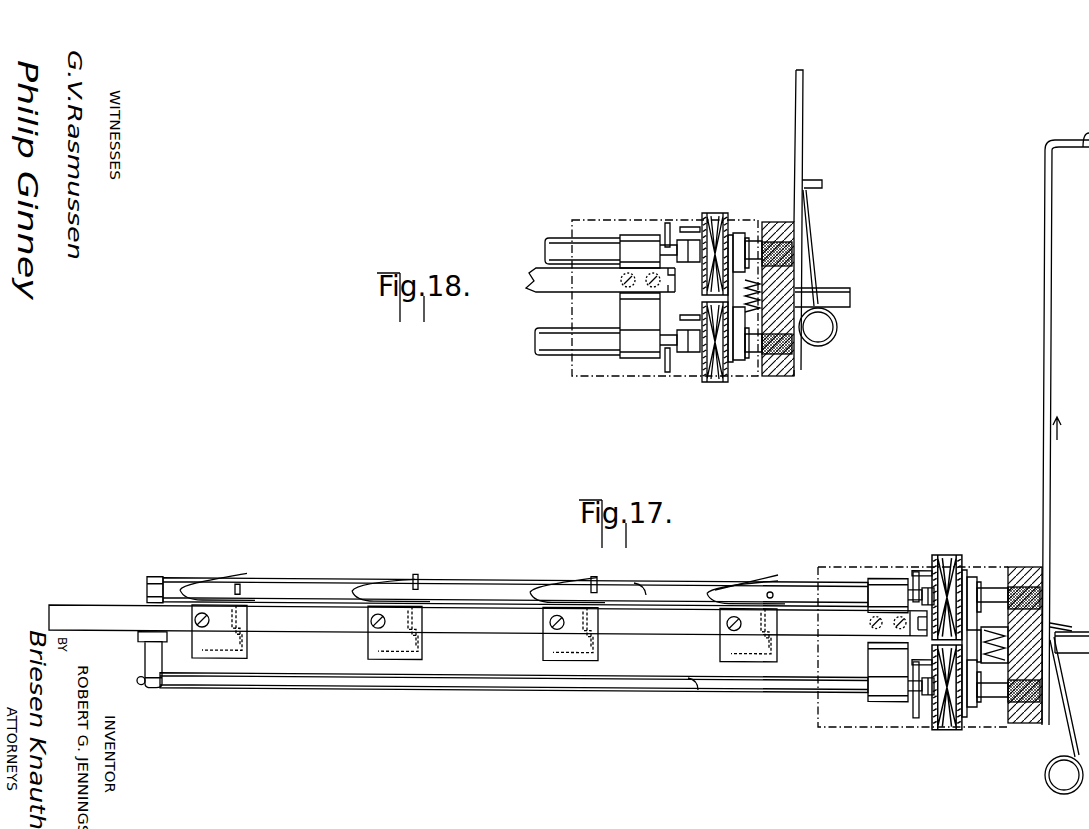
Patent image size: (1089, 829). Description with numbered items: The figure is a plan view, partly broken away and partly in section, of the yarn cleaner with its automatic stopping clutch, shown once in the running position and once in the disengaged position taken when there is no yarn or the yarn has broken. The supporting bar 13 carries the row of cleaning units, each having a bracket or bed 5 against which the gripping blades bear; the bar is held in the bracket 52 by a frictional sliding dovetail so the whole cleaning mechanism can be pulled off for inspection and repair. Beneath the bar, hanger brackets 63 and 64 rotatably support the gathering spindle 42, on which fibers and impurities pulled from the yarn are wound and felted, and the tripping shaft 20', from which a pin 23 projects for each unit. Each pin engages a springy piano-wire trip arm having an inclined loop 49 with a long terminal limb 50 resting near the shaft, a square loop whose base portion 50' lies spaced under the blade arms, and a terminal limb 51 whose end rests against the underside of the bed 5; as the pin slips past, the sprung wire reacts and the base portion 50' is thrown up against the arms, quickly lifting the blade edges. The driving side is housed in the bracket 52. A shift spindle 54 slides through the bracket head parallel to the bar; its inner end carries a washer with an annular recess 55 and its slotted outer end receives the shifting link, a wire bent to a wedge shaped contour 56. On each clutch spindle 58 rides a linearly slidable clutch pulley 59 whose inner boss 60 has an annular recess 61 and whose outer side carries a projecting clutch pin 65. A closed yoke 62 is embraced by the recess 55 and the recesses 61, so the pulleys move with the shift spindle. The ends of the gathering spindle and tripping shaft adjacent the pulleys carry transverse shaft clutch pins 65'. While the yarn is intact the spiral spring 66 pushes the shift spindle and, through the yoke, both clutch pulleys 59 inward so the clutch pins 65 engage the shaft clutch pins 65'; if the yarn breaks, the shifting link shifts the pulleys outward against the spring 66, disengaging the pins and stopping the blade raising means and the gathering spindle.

In FIG. 17, the bracket or bed 5 is at (247, 645).
In FIG. 18, the supporting bar 13 is at (536, 284).
In FIG. 17, the supporting bar 13 is at (88, 606).
In FIG. 18, the tripping shaft 20' is at (578, 239).
In FIG. 17, the tripping shaft 20' is at (515, 584).
In FIG. 17, the pin 23 is at (418, 578).
In FIG. 18, the gathering spindle 42 is at (550, 342).
In FIG. 17, the gathering spindle 42 is at (606, 684).
In FIG. 17, the loop 49 is at (352, 588).
In FIG. 17, the terminal limb 50 is at (431, 573).
In FIG. 17, the base portion 50' is at (527, 638).
In FIG. 17, the terminal limb 51 is at (400, 656).
In FIG. 18, the bracket 52 is at (796, 366).
In FIG. 17, the bracket 52 is at (1043, 575).
In FIG. 18, the shift spindle 54 is at (850, 295).
In FIG. 17, the shift spindle 54 is at (1088, 638).
In FIG. 17, the annular recess 55 is at (979, 632).
In FIG. 18, the wedge shaped contour 56 is at (813, 246).
In FIG. 17, the wedge shaped contour 56 is at (1070, 710).
In FIG. 18, the clutch spindle 58 is at (752, 355).
In FIG. 17, the clutch spindle 58 is at (990, 587).
In FIG. 18, the clutch pulley 59 is at (712, 213).
In FIG. 17, the clutch pulley 59 is at (947, 557).
In FIG. 18, the boss 60 is at (740, 232).
In FIG. 17, the boss 60 is at (972, 642).
In FIG. 18, the annular recess 61 is at (730, 233).
In FIG. 17, the annular recess 61 is at (964, 643).
In FIG. 18, the yoke 62 is at (738, 360).
In FIG. 17, the yoke 62 is at (968, 718).
In FIG. 18, the hanger bracket 63 is at (660, 296).
In FIG. 17, the hanger bracket 63 is at (879, 700).
In FIG. 17, the hanger bracket 64 is at (153, 578).
In FIG. 18, the clutch pin 65 is at (686, 256).
In FIG. 17, the clutch pin 65 is at (918, 601).
In FIG. 18, the shaft clutch pin 65' is at (653, 299).
In FIG. 17, the shaft clutch pin 65' is at (904, 660).
In FIG. 17, the spiral spring 66 is at (992, 648).